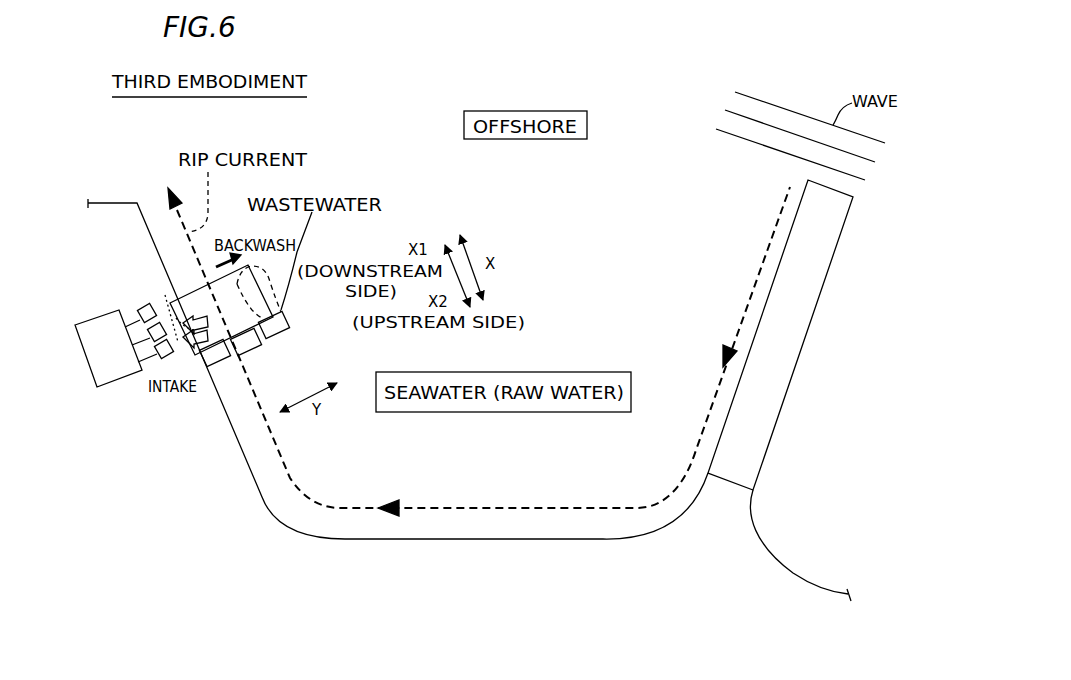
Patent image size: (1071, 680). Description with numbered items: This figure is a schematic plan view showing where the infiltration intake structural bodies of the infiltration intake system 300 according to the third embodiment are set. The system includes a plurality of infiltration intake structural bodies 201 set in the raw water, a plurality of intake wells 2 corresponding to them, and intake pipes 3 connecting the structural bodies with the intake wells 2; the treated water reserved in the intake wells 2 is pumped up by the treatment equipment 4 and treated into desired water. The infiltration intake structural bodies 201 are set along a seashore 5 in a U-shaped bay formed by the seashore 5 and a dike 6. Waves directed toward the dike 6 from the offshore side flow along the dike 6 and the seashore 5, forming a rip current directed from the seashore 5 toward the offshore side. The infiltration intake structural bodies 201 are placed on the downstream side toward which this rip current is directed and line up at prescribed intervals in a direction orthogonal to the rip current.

The intake well 2 is at (141, 305).
The intake pipe 3 is at (170, 308).
The treatment equipment 4 is at (97, 311).
The seashore 5 is at (600, 540).
The dike 6 is at (779, 413).
The infiltration intake structural body 201 is at (222, 368).
The infiltration intake system 300 is at (187, 440).